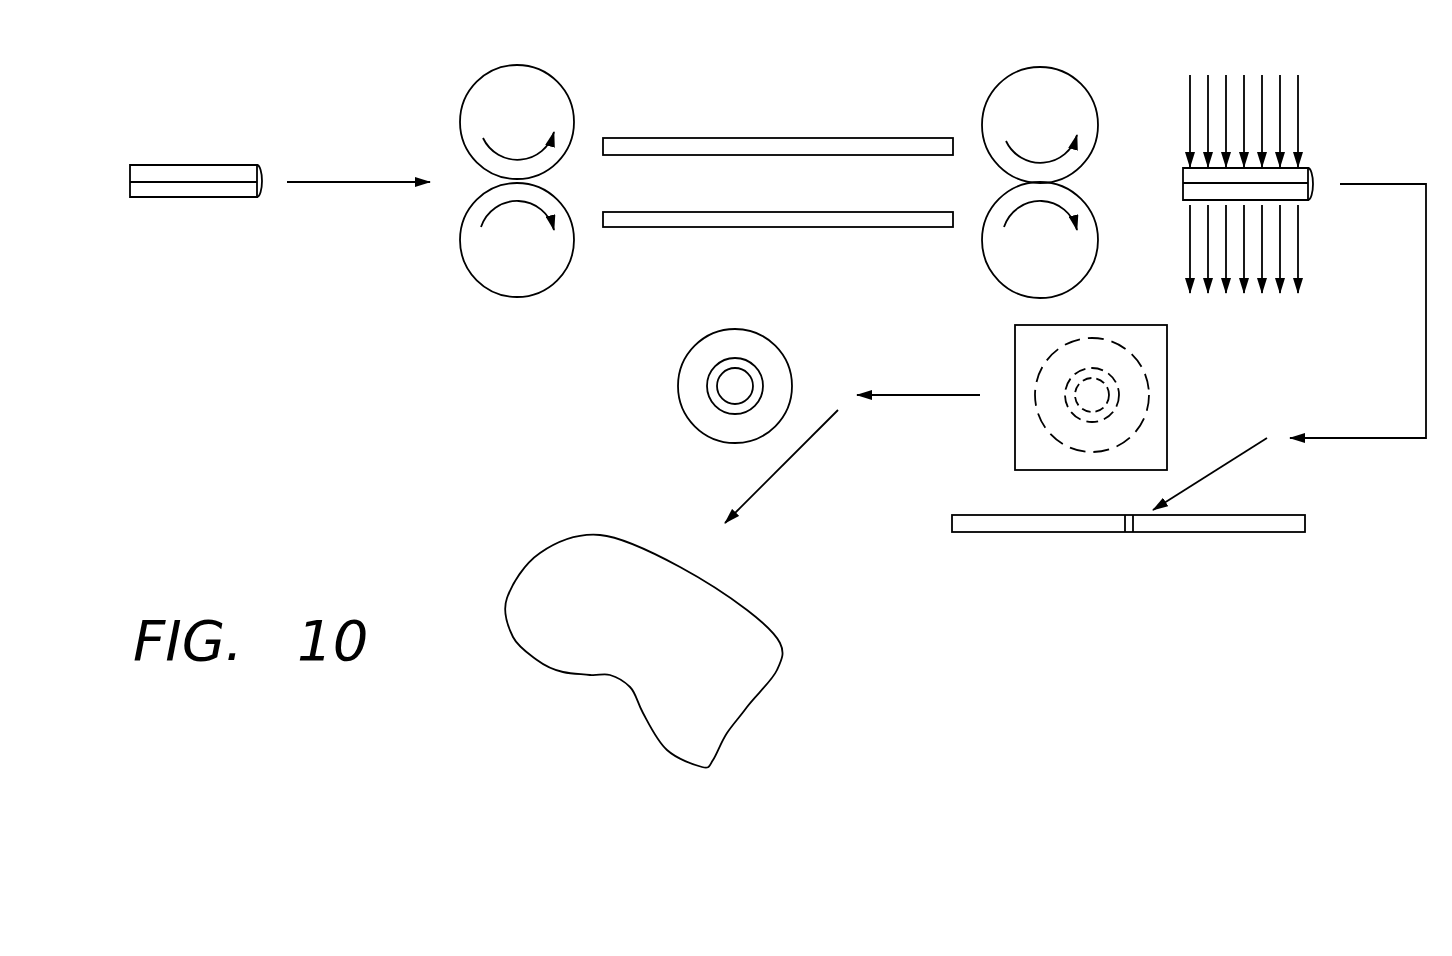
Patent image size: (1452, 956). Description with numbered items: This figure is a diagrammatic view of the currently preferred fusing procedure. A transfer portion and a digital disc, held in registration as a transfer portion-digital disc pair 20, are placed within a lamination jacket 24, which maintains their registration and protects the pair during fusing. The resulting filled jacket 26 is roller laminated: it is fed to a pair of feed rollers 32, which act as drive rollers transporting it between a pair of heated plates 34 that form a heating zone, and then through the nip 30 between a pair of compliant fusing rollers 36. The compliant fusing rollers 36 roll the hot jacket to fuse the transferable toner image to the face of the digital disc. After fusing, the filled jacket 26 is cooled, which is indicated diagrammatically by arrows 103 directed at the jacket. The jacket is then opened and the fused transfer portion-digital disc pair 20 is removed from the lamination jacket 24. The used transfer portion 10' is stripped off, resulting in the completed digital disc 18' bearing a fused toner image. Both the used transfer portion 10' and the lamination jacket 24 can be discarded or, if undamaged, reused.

The filled jacket 26 is at (192, 165).
The feed rollers 32 is at (503, 295).
The heated plates 34 is at (747, 138).
The nip 30 is at (1007, 182).
The compliant fusing rollers 36 is at (987, 260).
The arrows 103 is at (1297, 113).
The transfer portion-digital disc pair 20 is at (1167, 400).
The completed digital disc 18' is at (782, 371).
The lamination jacket 24 is at (1150, 532).
The used transfer portion 10' is at (723, 651).